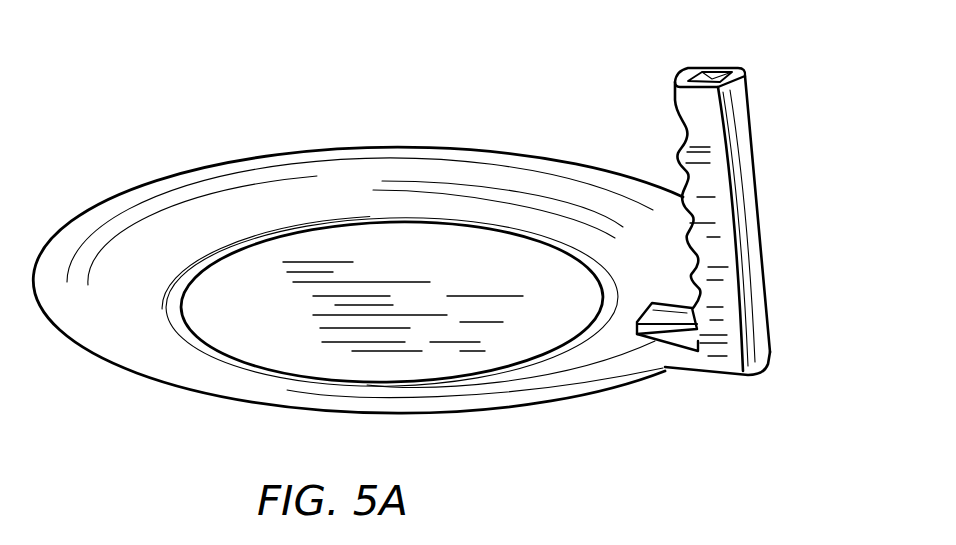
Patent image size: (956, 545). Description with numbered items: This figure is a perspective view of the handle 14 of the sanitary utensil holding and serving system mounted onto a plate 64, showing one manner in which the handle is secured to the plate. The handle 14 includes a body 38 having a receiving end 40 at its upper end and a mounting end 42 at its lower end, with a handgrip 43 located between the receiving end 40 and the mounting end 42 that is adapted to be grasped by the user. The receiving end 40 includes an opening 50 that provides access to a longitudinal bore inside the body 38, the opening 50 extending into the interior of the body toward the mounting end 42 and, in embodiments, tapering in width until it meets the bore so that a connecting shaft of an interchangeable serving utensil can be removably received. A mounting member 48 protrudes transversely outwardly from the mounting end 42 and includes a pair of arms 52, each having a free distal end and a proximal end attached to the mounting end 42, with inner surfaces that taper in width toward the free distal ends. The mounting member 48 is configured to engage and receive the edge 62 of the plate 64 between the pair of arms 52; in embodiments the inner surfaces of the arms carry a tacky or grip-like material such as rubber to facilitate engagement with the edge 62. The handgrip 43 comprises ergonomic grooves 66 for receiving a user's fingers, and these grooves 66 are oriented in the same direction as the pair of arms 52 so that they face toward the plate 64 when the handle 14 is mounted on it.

The handle 14 is at (729, 219).
The body 38 is at (747, 207).
The receiving end 40 is at (738, 68).
The mounting end 42 is at (712, 377).
The handgrip 43 is at (680, 162).
The mounting member 48 is at (650, 303).
The opening 50 is at (714, 68).
The pair of arms 52 is at (685, 305).
The edge 62 is at (548, 402).
The plate 64 is at (238, 202).
The ergonomic grooves 66 is at (682, 132).